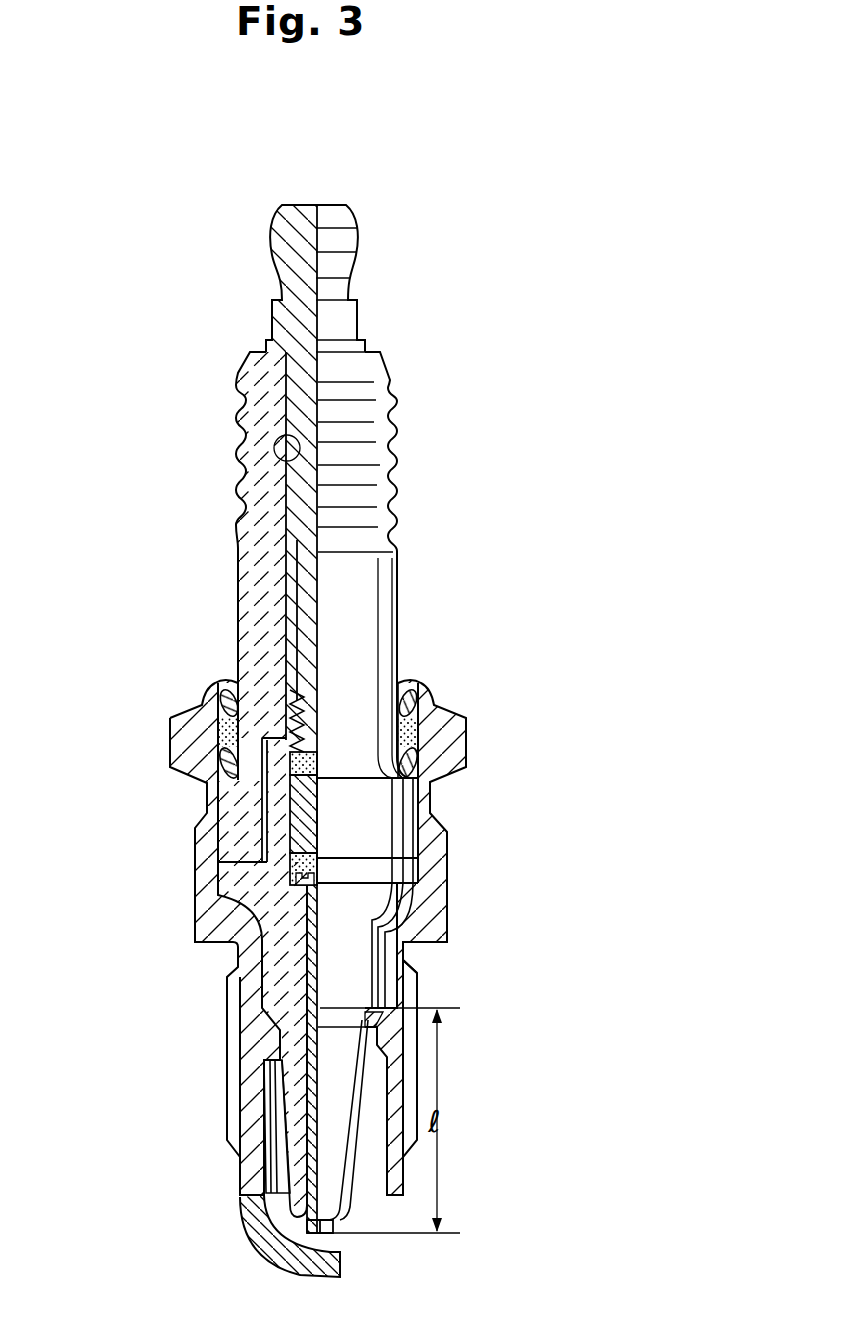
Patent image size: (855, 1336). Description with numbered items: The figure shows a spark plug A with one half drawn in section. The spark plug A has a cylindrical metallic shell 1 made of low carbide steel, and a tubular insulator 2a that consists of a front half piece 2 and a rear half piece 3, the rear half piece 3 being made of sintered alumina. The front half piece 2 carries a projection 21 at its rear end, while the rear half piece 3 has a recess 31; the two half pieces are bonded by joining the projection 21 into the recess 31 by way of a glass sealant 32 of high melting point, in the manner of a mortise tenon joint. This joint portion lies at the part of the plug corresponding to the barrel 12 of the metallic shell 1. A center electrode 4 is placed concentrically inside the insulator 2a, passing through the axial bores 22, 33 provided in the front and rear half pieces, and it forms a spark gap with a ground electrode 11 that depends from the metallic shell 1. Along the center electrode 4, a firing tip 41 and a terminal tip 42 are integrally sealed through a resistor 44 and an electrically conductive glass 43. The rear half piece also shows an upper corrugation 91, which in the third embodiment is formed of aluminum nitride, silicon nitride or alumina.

The metallic shell 1 is at (217, 1013).
The ground electrode 11 is at (270, 1247).
The barrel 12 is at (428, 876).
The front half piece 2 is at (367, 1100).
The tubular insulator 2a is at (272, 683).
The projection 21 is at (285, 792).
The axial bore 22 is at (308, 1090).
The rear half piece 3 is at (232, 562).
The recess 31 is at (235, 832).
The glass sealant 32 is at (322, 813).
The axial bore 33 is at (282, 462).
The center electrode 4 is at (352, 1223).
The firing tip 41 is at (307, 958).
The terminal tip 42 is at (303, 591).
The electrically conductive glass 43 is at (300, 757).
The resistor 44 is at (355, 790).
The upper corrugation 91 is at (240, 396).
The spark plug A is at (410, 282).